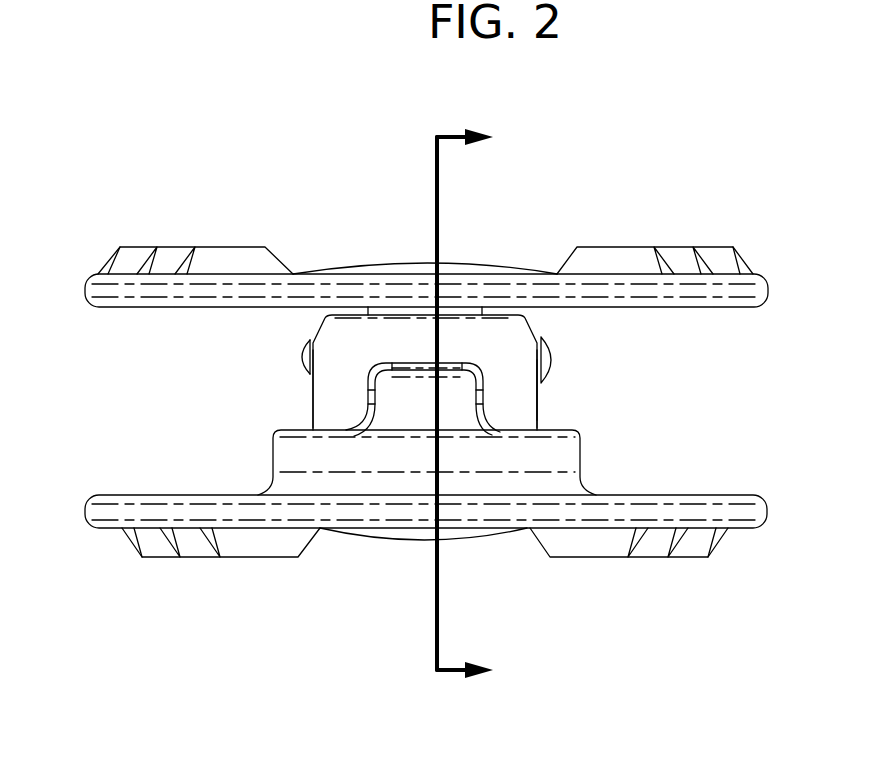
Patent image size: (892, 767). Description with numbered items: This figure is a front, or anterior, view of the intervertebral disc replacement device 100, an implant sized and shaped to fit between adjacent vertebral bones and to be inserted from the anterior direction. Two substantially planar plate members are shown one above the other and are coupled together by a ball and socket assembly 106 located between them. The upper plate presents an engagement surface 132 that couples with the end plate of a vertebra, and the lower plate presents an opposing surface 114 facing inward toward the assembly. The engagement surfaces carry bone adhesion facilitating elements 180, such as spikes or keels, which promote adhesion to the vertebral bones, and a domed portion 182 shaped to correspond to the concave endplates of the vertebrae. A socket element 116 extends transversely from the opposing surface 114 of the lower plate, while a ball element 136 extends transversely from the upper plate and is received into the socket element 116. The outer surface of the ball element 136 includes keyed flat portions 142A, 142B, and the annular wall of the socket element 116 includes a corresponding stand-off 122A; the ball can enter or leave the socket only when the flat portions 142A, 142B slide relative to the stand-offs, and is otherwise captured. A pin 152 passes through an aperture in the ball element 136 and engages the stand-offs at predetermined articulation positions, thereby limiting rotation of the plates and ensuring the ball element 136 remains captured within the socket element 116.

The intervertebral disc replacement device 100 is at (517, 93).
The ball and socket assembly 106 is at (600, 373).
The opposing surface 114 is at (147, 494).
The socket element 116 is at (583, 443).
The stand-off 122A is at (418, 385).
The engagement surface 132 is at (268, 248).
The ball element 136 is at (518, 395).
The flat portion 142A is at (540, 404).
The flat portion 142B is at (311, 403).
The pin 152 is at (297, 371).
The bone adhesion facilitating elements 180 is at (617, 222).
The domed portion 182 is at (422, 258).